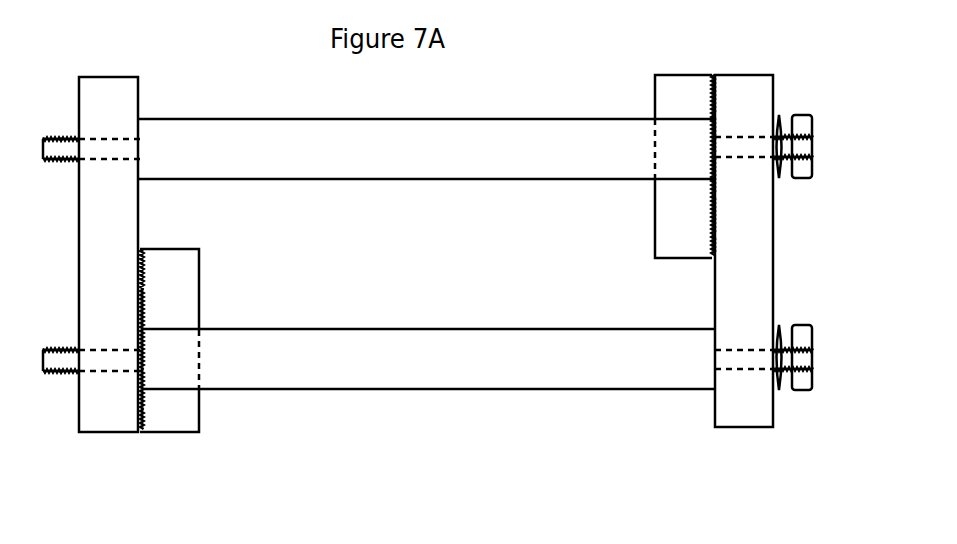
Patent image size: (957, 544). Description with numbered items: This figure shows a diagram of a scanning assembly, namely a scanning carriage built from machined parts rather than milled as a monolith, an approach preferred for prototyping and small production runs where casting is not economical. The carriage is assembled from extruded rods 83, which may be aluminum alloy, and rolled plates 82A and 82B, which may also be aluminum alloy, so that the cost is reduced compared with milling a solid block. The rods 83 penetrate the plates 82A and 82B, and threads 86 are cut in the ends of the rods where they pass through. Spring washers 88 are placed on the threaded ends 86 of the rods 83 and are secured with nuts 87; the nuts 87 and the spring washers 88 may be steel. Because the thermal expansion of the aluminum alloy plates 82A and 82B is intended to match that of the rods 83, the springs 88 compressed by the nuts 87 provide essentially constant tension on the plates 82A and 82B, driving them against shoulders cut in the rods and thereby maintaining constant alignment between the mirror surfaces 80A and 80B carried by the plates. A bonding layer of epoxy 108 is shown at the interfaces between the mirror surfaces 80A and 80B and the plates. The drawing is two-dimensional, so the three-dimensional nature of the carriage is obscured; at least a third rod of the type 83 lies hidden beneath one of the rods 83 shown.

The mirror surface 80A is at (200, 298).
The mirror surface 80B is at (655, 250).
The rolled plate 82A is at (122, 432).
The rolled plate 82B is at (737, 427).
The extruded rod 83 is at (422, 368).
The threads 86 is at (53, 161).
The nut 87 is at (803, 115).
The spring washer 88 is at (777, 160).
The epoxy 108 is at (143, 280).